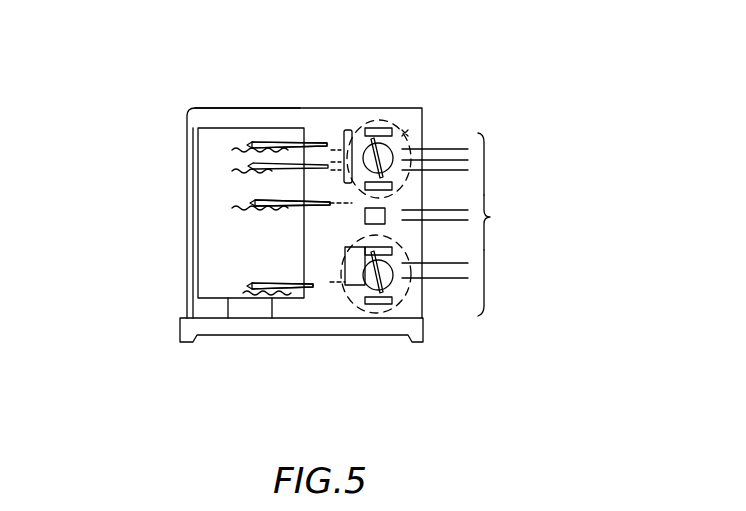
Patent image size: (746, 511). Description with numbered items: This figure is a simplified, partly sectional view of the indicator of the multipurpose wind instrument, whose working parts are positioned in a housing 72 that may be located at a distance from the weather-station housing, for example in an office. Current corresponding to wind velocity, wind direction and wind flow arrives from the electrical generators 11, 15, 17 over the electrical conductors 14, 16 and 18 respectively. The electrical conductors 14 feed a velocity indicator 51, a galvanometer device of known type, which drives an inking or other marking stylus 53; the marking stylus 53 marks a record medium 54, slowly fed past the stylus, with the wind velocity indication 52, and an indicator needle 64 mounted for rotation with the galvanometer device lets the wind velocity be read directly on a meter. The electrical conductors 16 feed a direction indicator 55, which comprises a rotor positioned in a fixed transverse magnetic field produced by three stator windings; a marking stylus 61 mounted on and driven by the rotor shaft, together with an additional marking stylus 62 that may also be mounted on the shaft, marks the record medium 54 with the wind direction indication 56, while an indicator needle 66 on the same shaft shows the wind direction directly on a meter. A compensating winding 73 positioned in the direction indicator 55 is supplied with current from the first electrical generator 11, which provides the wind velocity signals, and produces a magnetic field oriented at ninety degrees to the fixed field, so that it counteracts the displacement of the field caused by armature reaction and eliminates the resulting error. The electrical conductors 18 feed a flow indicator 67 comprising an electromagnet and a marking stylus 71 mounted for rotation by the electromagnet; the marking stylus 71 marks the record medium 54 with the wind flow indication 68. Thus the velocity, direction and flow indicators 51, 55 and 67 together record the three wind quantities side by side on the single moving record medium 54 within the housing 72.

The housing 72 is at (222, 113).
The additional marking stylus 62 is at (285, 136).
The record medium 54 is at (210, 252).
The wind direction indication 56 is at (250, 143).
The marking stylus 61 is at (279, 170).
The wind flow indication 68 is at (252, 203).
The marking stylus 71 is at (274, 210).
The wind velocity indication 52 is at (250, 294).
The marking stylus 53 is at (314, 287).
The direction indicator 55 is at (400, 128).
The indicator needle 66 is at (374, 143).
The compensating winding 73 is at (348, 129).
The flow indicator 67 is at (387, 221).
The velocity indicator 51 is at (398, 302).
The indicator needle 64 is at (353, 284).
The electrical conductors 16 is at (446, 166).
The electrical conductors 18 is at (443, 226).
The electrical conductors 14 is at (448, 276).
The first electrical generator 11 is at (575, 189).
The electrical generator 15 is at (518, 222).
The electrical generator 17 is at (532, 272).